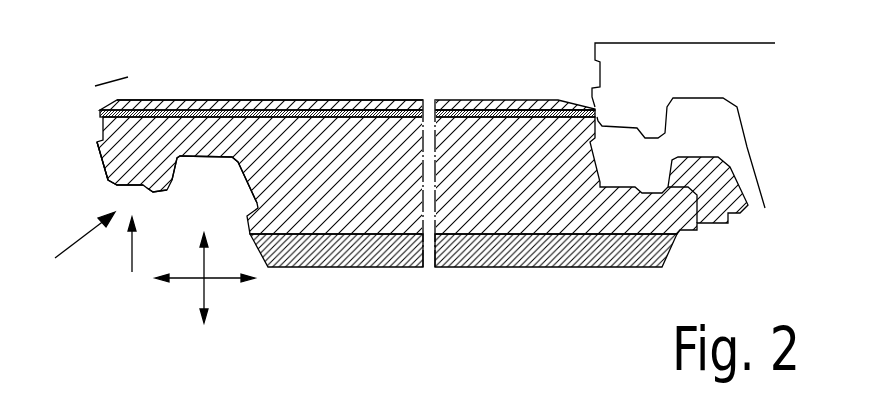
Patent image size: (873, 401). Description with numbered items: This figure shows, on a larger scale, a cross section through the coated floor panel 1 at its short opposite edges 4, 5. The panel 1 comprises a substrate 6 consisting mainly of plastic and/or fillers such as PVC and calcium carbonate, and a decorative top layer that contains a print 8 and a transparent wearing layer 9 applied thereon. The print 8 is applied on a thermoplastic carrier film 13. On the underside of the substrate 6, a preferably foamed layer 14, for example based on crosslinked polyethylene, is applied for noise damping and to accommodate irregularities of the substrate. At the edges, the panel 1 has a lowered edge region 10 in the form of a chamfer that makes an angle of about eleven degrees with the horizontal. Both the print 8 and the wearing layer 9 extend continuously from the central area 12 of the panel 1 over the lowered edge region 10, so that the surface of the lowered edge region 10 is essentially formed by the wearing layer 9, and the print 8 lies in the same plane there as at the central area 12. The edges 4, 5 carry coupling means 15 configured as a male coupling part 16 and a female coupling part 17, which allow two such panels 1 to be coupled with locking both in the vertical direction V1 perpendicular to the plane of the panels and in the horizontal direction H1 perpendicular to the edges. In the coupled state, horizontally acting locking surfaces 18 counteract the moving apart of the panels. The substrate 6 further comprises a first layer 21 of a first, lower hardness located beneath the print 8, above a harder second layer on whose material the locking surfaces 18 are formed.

The coated panel 1 is at (472, 145).
The short opposite edge 4 is at (74, 246).
The short opposite edge 5 is at (632, 153).
The substrate 6 is at (335, 187).
The print 8 is at (393, 111).
The transparent wearing layer 9 is at (262, 101).
The lowered edge region 10 is at (113, 78).
The central area 12 is at (312, 100).
The thermoplastic carrier film 13 is at (188, 110).
The foamed layer 14 is at (533, 250).
The coupling means 15 is at (135, 259).
The male coupling part 16 is at (138, 152).
The female coupling part 17 is at (629, 203).
The horizontally acting locking surfaces 18 is at (172, 181).
The first layer 21 is at (552, 112).
The horizontal direction H1 is at (191, 278).
The vertical direction V1 is at (205, 269).